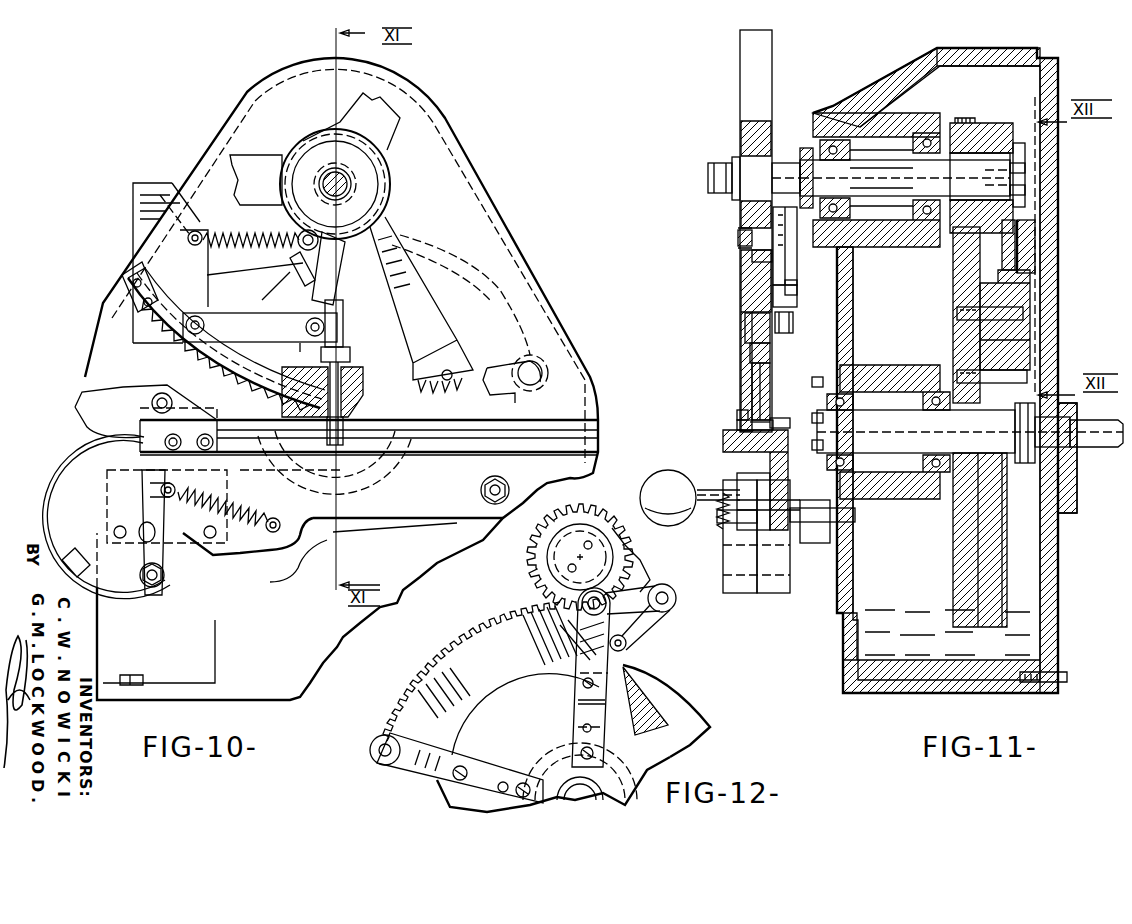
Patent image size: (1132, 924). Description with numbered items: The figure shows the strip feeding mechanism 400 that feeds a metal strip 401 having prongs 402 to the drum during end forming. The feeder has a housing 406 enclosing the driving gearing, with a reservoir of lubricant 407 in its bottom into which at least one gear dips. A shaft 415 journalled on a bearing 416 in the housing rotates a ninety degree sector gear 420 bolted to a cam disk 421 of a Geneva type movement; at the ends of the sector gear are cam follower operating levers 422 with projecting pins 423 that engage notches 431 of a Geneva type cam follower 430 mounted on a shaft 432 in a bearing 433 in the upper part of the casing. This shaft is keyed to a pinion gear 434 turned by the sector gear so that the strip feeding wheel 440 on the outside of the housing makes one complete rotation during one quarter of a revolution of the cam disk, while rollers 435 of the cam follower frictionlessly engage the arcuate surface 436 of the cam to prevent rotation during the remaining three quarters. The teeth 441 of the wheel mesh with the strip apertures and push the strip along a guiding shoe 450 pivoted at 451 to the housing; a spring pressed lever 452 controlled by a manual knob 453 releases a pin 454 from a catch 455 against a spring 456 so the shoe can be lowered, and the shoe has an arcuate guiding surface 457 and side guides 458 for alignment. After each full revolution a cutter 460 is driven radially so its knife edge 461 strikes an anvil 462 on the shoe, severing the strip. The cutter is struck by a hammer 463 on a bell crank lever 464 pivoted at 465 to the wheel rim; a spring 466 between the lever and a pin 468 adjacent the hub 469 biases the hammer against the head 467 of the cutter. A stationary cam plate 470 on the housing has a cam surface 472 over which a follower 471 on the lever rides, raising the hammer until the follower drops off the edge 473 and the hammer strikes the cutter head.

In FIG. 10, the strip feeding mechanism 400 is at (551, 267).
In FIG. 11, the strip feeding mechanism 400 is at (730, 277).
In FIG. 11, the metal strip 401 is at (750, 424).
In FIG. 11, the prongs 402 is at (773, 424).
In FIG. 10, the housing 406 is at (430, 126).
In FIG. 11, the housing 406 is at (880, 85).
In FIG. 11, the lubricant 407 is at (1033, 607).
In FIG. 11, the shaft 415 is at (1088, 460).
In FIG. 12, the shaft 415 is at (607, 797).
In FIG. 11, the bearing 416 is at (875, 392).
In FIG. 10, the sector gear 420 is at (462, 256).
In FIG. 11, the sector gear 420 is at (1025, 257).
In FIG. 12, the sector gear 420 is at (440, 662).
In FIG. 11, the cam disk 421 is at (987, 293).
In FIG. 12, the cam disk 421 is at (643, 673).
In FIG. 10, the cam follower operating levers 422 is at (513, 407).
In FIG. 11, the cam follower operating levers 422 is at (1020, 330).
In FIG. 12, the cam follower operating levers 422 is at (540, 724).
In FIG. 11, the projecting pins 423 is at (1005, 222).
In FIG. 12, the projecting pins 423 is at (390, 742).
In FIG. 11, the Geneva type cam follower 430 is at (985, 140).
In FIG. 12, the Geneva type cam follower 430 is at (680, 597).
In FIG. 11, the notches 431 is at (1010, 245).
In FIG. 12, the notches 431 is at (662, 584).
In FIG. 10, the shaft 432 is at (350, 178).
In FIG. 11, the shaft 432 is at (905, 178).
In FIG. 12, the shaft 432 is at (553, 563).
In FIG. 11, the bearing 433 is at (905, 240).
In FIG. 11, the pinion gear 434 is at (965, 127).
In FIG. 12, the pinion gear 434 is at (573, 600).
In FIG. 11, the rollers 435 is at (990, 286).
In FIG. 12, the rollers 435 is at (637, 643).
In FIG. 12, the arcuate surface 436 is at (700, 713).
In FIG. 10, the strip feeding wheel 440 is at (392, 207).
In FIG. 11, the strip feeding wheel 440 is at (740, 135).
In FIG. 10, the teeth 441 is at (195, 372).
In FIG. 11, the teeth 441 is at (740, 413).
In FIG. 10, the guiding shoe 450 is at (440, 497).
In FIG. 11, the guiding shoe 450 is at (773, 601).
In FIG. 10, the pivot 451 is at (495, 476).
In FIG. 10, the spring pressed lever 452 is at (203, 560).
In FIG. 11, the spring pressed lever 452 is at (745, 556).
In FIG. 11, the manual knob 453 is at (672, 470).
In FIG. 10, the pin 454 is at (160, 490).
In FIG. 11, the pin 454 is at (720, 468).
In FIG. 10, the catch 455 is at (205, 470).
In FIG. 11, the catch 455 is at (850, 520).
In FIG. 10, the spring 456 is at (230, 509).
In FIG. 11, the spring 456 is at (740, 520).
In FIG. 10, the arcuate guiding surface 457 is at (68, 468).
In FIG. 10, the side guides 458 is at (75, 407).
In FIG. 10, the cutter 460 is at (363, 380).
In FIG. 11, the cutter 460 is at (753, 383).
In FIG. 10, the knife edge 461 is at (334, 420).
In FIG. 11, the knife edge 461 is at (750, 407).
In FIG. 11, the anvil 462 is at (730, 443).
In FIG. 10, the hammer 463 is at (343, 320).
In FIG. 11, the hammer 463 is at (753, 330).
In FIG. 10, the bell crank lever 464 is at (321, 274).
In FIG. 11, the bell crank lever 464 is at (757, 255).
In FIG. 10, the pivot 465 is at (206, 326).
In FIG. 10, the spring 466 is at (287, 248).
In FIG. 11, the spring 466 is at (740, 230).
In FIG. 10, the head 467 is at (262, 270).
In FIG. 11, the head 467 is at (752, 352).
In FIG. 10, the pin 468 is at (300, 232).
In FIG. 11, the pin 468 is at (737, 238).
In FIG. 10, the hub 469 is at (392, 186).
In FIG. 11, the hub 469 is at (743, 210).
In FIG. 10, the cam plate 470 is at (132, 215).
In FIG. 11, the cam plate 470 is at (783, 295).
In FIG. 10, the follower 471 is at (306, 342).
In FIG. 11, the follower 471 is at (780, 310).
In FIG. 10, the cam surface 472 is at (176, 184).
In FIG. 11, the cam surface 472 is at (795, 261).
In FIG. 10, the edge 473 is at (274, 281).
In FIG. 11, the edge 473 is at (795, 285).